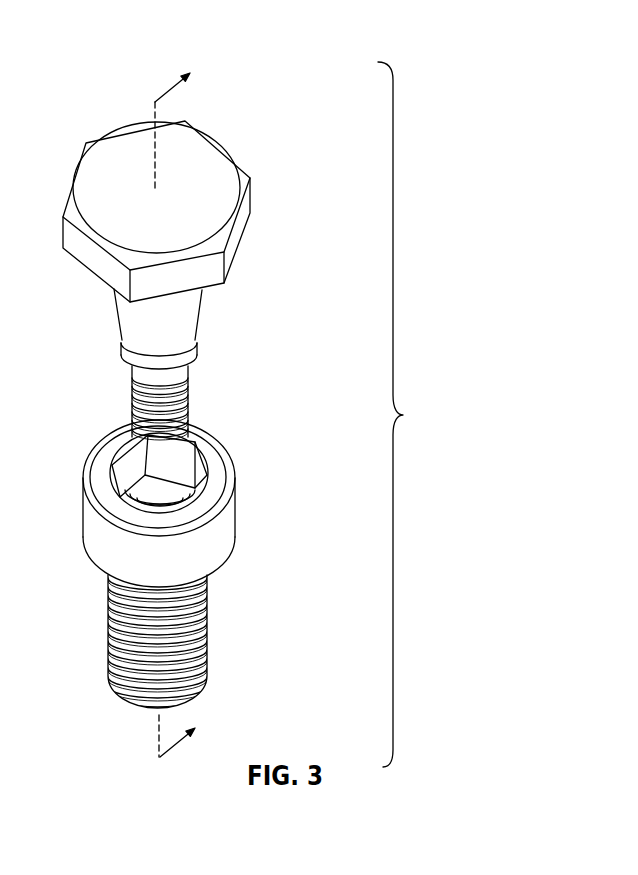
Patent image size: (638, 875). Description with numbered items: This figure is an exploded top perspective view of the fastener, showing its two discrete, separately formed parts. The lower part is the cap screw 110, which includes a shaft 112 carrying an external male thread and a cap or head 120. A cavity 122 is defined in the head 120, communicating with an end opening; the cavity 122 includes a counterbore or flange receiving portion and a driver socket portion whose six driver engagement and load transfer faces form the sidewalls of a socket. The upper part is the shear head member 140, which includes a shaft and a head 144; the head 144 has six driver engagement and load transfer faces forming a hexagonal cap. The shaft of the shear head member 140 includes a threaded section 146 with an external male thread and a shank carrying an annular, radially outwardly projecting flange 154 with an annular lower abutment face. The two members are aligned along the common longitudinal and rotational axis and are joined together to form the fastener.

The cap screw 110 is at (4, 36).
The shaft 112 is at (130, 645).
The head 120 is at (227, 517).
The cavity 122 is at (181, 460).
The shear head member 140 is at (263, 128).
The head 144 is at (238, 220).
The threaded section 146 is at (128, 403).
The flange 154 is at (120, 358).